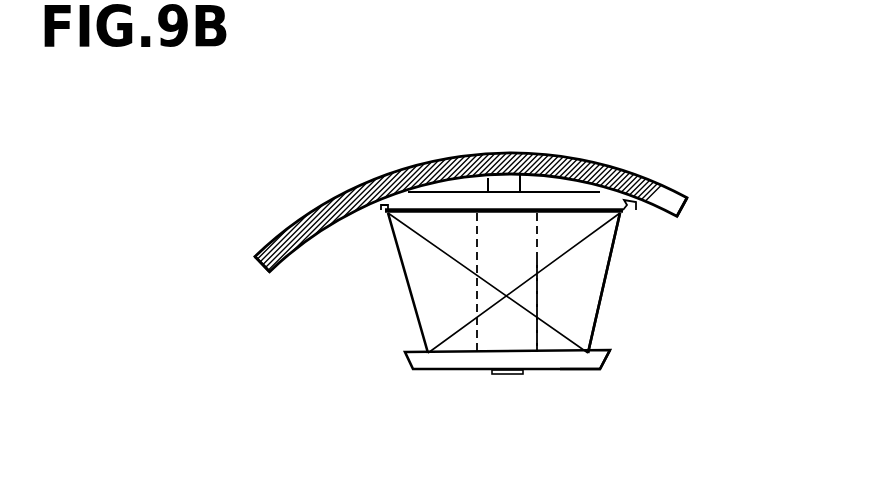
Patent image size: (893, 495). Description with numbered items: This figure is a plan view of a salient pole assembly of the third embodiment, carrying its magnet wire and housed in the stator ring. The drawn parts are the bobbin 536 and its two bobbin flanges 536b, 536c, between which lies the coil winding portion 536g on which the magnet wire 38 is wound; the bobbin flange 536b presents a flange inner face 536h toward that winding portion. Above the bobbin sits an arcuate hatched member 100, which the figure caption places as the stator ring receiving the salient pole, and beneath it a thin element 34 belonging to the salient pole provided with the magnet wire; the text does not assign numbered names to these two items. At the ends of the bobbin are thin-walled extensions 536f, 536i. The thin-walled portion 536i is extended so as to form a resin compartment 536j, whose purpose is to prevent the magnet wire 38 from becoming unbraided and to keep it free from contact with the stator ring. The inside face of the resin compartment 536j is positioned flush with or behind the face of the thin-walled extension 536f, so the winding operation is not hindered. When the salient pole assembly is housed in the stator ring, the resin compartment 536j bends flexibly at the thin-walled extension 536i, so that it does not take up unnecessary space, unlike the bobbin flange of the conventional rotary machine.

The arcuate hatched member 100 is at (460, 160).
The thin plate member 34 is at (545, 158).
The magnet wire 38 is at (443, 292).
The bobbin 536 is at (440, 362).
The bobbin flange 536b is at (588, 197).
The bobbin flange 536c is at (607, 357).
The thin-walled extension 536f is at (643, 178).
The coil winding portion 536g is at (537, 297).
The flange inner face 536h is at (572, 212).
The thin-walled extension 536i is at (362, 188).
The resin compartment 536j is at (342, 222).